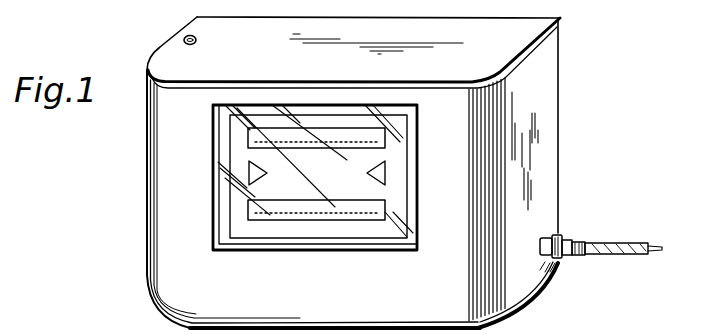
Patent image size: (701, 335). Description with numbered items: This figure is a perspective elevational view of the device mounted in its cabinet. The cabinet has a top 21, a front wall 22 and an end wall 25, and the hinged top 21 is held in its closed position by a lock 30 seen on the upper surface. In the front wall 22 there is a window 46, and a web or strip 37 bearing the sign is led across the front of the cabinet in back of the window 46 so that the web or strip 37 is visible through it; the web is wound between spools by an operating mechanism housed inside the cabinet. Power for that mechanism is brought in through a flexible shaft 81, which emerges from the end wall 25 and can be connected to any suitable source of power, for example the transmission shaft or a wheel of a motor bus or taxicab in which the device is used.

The top 21 is at (520, 42).
The front wall 22 is at (313, 199).
The end wall 25 is at (553, 143).
The lock 30 is at (184, 38).
The web or strip 37 is at (397, 190).
The window 46 is at (408, 238).
The flexible shaft 81 is at (620, 242).